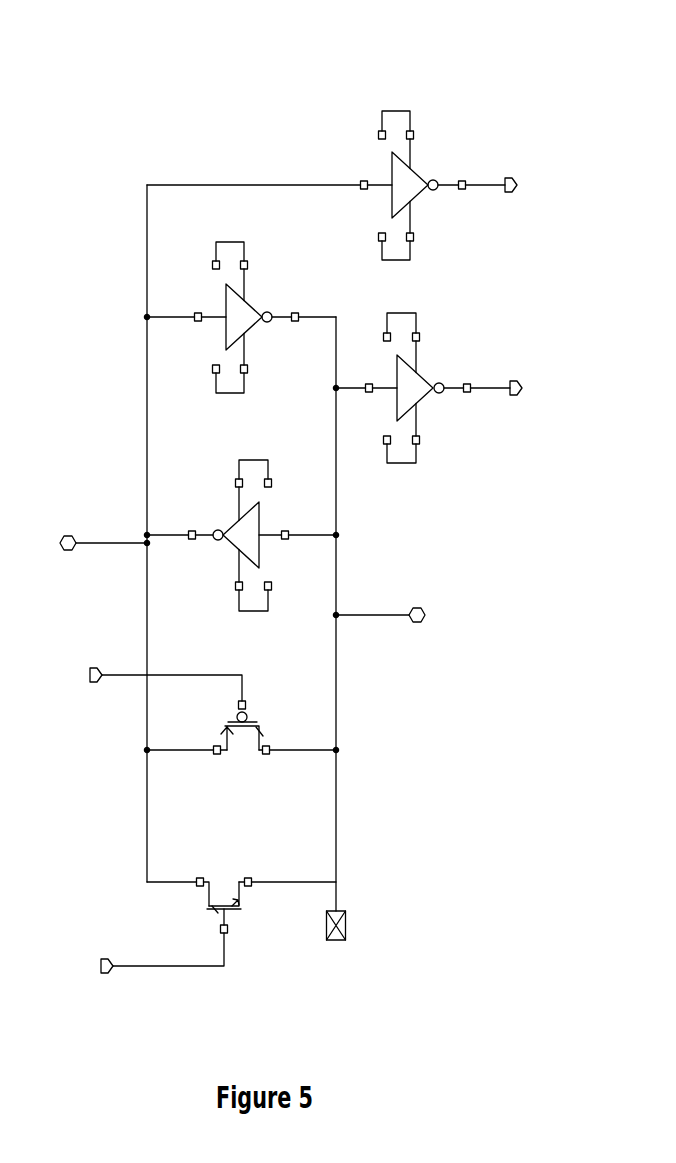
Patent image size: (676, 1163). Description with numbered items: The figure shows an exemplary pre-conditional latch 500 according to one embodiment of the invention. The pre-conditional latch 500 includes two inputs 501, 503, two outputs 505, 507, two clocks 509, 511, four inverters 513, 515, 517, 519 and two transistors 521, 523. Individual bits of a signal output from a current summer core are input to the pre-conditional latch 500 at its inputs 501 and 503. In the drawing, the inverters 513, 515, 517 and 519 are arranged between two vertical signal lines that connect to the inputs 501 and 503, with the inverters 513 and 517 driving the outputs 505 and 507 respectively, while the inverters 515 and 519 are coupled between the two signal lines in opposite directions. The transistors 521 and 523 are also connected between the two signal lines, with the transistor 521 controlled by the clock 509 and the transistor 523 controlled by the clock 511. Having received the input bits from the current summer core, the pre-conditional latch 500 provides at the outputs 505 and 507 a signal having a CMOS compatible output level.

The pre-conditional latch 500 is at (572, 41).
The input 501 is at (58, 532).
The input 503 is at (427, 603).
The output 505 is at (520, 183).
The output 507 is at (536, 387).
The clock 509 is at (83, 658).
The clock 511 is at (103, 949).
The inverter 513 is at (387, 165).
The inverter 515 is at (258, 298).
The inverter 517 is at (427, 373).
The inverter 519 is at (224, 522).
The transistor 521 is at (258, 717).
The transistor 523 is at (222, 877).